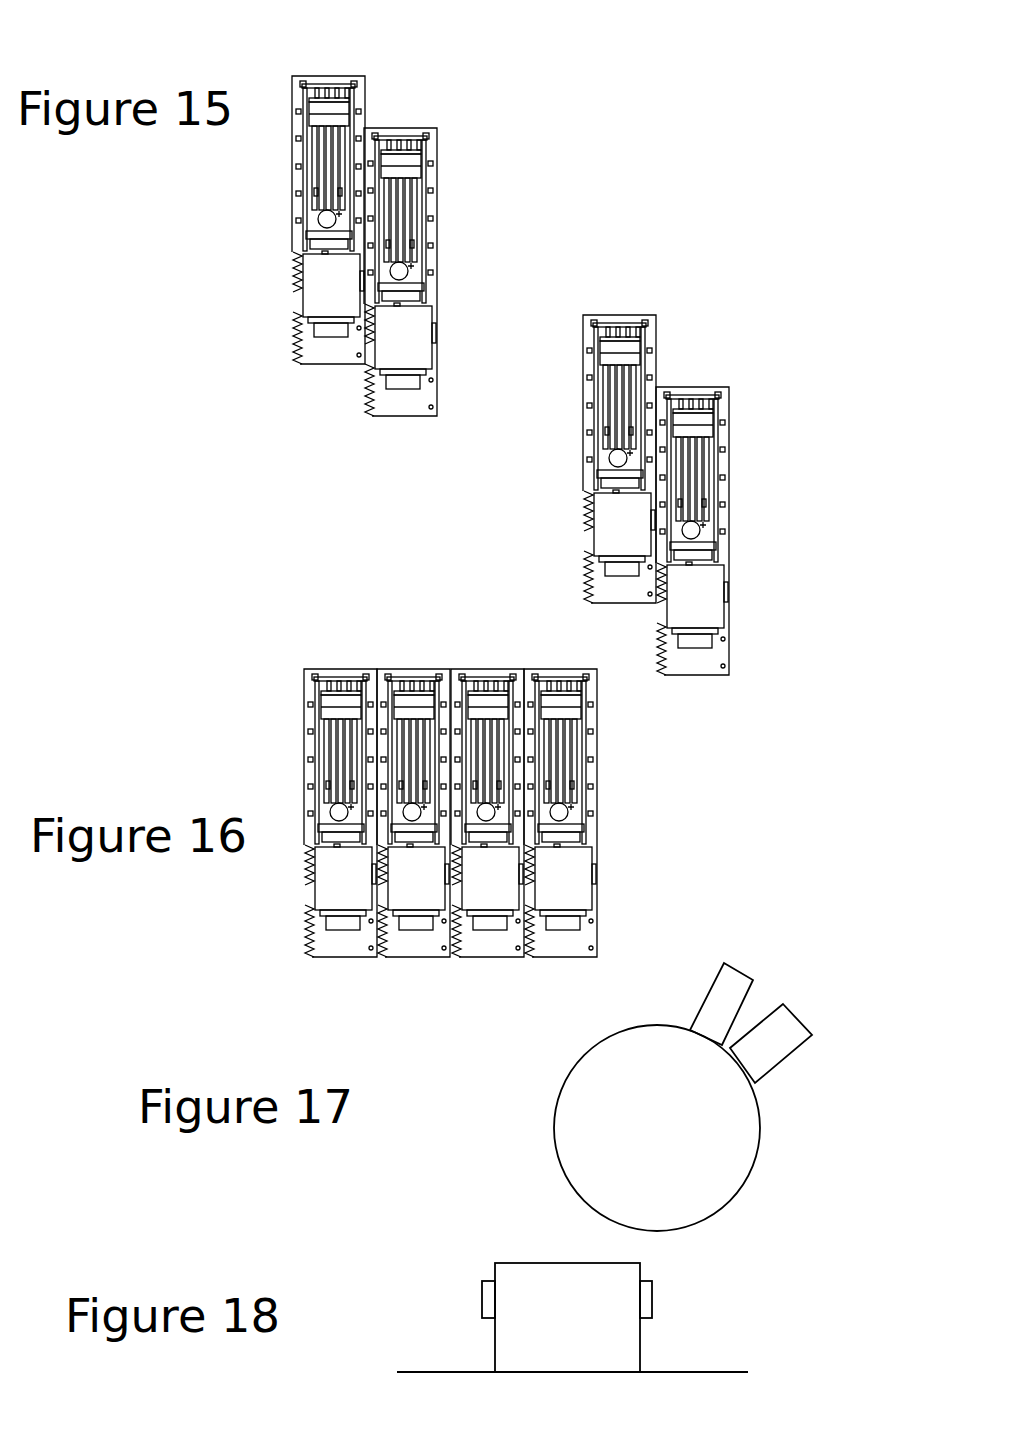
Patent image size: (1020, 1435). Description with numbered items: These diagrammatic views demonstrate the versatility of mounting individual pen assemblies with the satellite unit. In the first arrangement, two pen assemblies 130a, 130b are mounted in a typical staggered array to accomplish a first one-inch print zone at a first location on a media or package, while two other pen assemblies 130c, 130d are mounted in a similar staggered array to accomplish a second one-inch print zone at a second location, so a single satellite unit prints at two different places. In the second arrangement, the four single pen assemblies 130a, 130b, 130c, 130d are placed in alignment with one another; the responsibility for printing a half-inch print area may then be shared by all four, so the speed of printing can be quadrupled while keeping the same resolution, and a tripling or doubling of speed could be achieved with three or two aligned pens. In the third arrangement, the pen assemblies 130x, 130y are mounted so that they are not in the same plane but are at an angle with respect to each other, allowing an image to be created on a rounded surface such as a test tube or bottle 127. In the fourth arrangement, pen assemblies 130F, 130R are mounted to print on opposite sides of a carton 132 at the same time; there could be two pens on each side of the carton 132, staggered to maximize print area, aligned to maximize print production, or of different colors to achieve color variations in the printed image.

In FIG. 15, the pen assembly 130a is at (318, 76).
In FIG. 16, the pen assembly 130a is at (347, 667).
In FIG. 15, the pen assembly 130b is at (420, 128).
In FIG. 16, the pen assembly 130b is at (437, 667).
In FIG. 15, the pen assembly 130c is at (612, 315).
In FIG. 16, the pen assembly 130c is at (507, 667).
In FIG. 15, the pen assembly 130d is at (700, 388).
In FIG. 16, the pen assembly 130d is at (583, 667).
In FIG. 17, the pen assembly 130x is at (738, 975).
In FIG. 17, the pen assembly 130y is at (800, 1022).
In FIG. 17, the test tube or bottle 127 is at (740, 1135).
In FIG. 18, the carton 132 is at (622, 1275).
In FIG. 18, the front feeder 130F is at (484, 1293).
In FIG. 18, the rear feeder 130R is at (650, 1298).